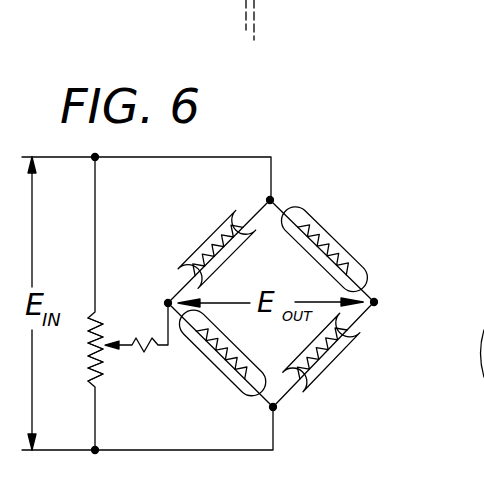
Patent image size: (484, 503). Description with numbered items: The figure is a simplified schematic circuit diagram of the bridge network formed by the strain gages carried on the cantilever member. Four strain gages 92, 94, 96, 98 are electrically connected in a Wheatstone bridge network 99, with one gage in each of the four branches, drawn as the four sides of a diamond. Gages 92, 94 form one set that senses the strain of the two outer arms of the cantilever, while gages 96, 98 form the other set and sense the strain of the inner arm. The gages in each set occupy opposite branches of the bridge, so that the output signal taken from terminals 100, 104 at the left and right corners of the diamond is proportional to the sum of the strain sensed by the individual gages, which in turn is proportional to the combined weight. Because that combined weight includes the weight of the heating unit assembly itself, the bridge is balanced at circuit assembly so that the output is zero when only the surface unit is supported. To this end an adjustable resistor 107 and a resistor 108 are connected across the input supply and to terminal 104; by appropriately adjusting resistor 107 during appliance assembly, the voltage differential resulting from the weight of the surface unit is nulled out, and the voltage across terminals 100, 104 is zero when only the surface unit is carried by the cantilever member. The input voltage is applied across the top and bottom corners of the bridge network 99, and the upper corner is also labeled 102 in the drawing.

The strain gage 92 is at (214, 232).
The strain gage 94 is at (340, 358).
The strain gage 96 is at (341, 248).
The strain gage 98 is at (232, 386).
The Wheatstone bridge network 99 is at (297, 192).
The terminal 100 is at (380, 302).
The input terminal node 102 is at (268, 198).
The terminal 104 is at (165, 302).
The adjustable resistor 107 is at (102, 378).
The resistor 108 is at (138, 352).